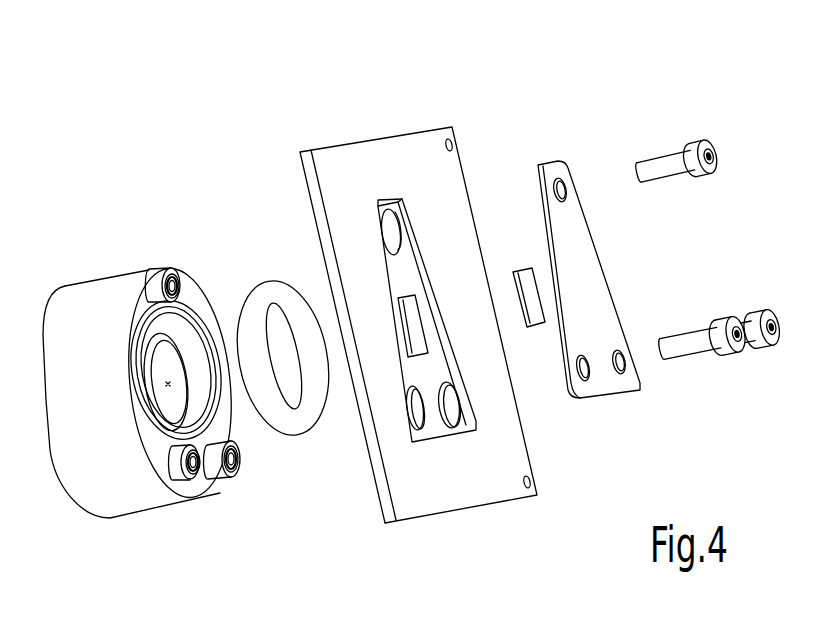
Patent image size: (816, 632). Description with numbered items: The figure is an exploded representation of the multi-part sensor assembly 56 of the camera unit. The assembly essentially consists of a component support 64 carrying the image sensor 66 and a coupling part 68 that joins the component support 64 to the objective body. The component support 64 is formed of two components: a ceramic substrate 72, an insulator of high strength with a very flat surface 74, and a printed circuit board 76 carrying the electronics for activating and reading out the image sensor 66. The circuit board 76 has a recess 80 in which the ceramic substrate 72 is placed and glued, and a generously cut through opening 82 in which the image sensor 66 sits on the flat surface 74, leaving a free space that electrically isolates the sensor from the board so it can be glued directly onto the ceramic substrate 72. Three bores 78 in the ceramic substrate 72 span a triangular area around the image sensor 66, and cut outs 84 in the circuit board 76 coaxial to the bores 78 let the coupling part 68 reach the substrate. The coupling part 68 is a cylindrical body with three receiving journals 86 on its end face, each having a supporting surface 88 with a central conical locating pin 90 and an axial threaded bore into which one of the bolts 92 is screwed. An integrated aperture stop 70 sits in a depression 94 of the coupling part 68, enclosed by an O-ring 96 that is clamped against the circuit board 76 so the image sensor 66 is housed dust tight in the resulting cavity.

The sensor assembly 56 is at (271, 72).
The component support 64 is at (455, 85).
The image sensor 66 is at (540, 311).
The coupling part 68 is at (95, 455).
The aperture stop 70 is at (166, 385).
The ceramic substrate 72 is at (610, 385).
The flat surface 74 is at (537, 210).
The printed circuit board 76 is at (470, 485).
The bores 78 is at (560, 192).
The recess 80 is at (432, 432).
The through opening 82 is at (410, 323).
The cut outs 84 is at (388, 227).
The receiving journals 86 is at (155, 268).
The supporting surface 88 is at (172, 270).
The conical locating pin 90 is at (175, 288).
The bolts 92 is at (667, 170).
The depression 94 is at (196, 355).
The O-ring 96 is at (257, 385).